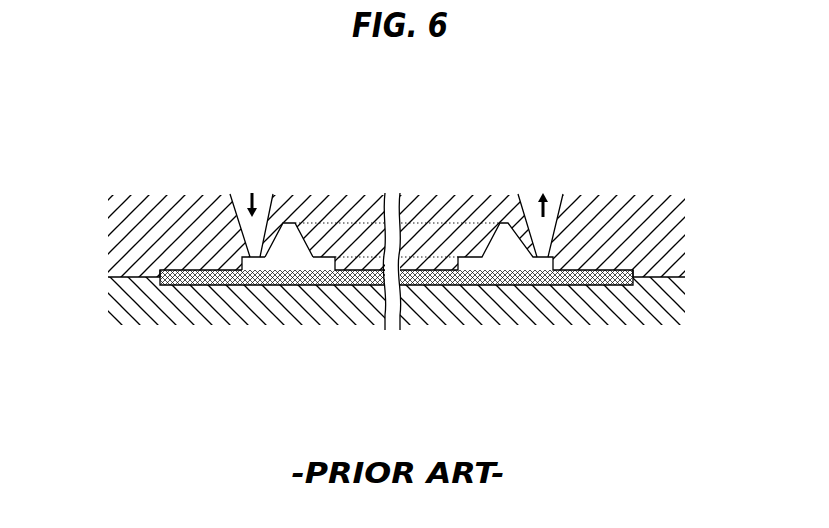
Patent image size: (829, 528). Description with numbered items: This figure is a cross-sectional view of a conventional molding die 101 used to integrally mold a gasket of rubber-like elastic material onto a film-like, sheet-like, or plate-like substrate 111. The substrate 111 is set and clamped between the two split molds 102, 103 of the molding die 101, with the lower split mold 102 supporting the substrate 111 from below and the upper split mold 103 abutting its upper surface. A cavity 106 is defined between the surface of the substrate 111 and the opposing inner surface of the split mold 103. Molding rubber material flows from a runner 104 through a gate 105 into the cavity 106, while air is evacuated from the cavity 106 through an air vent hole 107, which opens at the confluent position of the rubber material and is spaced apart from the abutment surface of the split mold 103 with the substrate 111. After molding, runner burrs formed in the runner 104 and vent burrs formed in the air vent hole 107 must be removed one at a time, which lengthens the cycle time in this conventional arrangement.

The molding die 101 is at (384, 244).
The split mold 102 is at (640, 313).
The split mold 103 is at (647, 200).
The runner 104 is at (238, 197).
The gate 105 is at (252, 258).
The cavity 106 is at (287, 258).
The air vent hole 107 is at (533, 200).
The substrate 111 is at (470, 282).